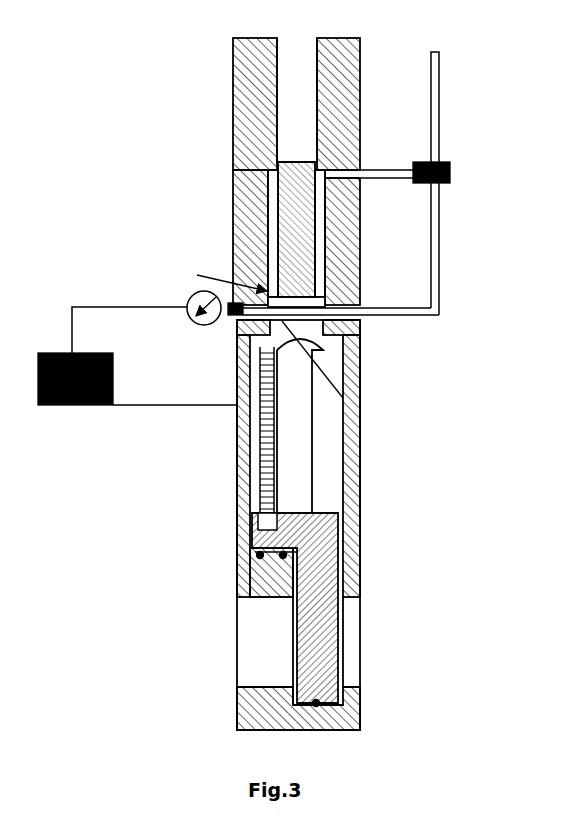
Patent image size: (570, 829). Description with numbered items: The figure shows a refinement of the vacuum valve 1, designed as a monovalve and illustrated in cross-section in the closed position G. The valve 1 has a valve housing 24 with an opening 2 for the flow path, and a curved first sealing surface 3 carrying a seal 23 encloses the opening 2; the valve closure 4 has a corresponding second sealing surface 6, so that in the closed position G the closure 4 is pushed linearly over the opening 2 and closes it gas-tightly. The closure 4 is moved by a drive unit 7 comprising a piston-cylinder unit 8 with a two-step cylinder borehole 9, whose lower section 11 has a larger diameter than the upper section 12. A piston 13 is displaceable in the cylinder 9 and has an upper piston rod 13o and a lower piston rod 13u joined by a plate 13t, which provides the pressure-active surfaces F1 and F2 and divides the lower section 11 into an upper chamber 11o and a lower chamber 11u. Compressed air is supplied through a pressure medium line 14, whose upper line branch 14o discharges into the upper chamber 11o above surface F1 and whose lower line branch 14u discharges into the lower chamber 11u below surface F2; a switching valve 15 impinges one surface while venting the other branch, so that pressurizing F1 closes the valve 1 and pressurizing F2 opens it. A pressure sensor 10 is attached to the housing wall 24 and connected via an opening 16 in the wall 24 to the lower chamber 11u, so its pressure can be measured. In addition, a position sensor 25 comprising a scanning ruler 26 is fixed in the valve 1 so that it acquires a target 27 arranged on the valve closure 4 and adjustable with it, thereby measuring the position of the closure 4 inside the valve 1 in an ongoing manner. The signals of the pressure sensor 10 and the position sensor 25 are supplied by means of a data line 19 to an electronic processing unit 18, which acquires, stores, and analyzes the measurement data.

The vacuum valve 1 is at (212, 52).
The opening 2 is at (248, 673).
The first sealing surface 3 is at (250, 597).
The valve closure 4 is at (322, 563).
The second sealing surface 6 is at (273, 567).
The drive unit 7 is at (474, 94).
The piston-cylinder unit 8 is at (224, 252).
The cylinder borehole 9 is at (250, 214).
The pressure sensor 10 is at (212, 322).
The lower section of cylinder borehole 11 is at (332, 258).
The upper chamber 11o is at (270, 180).
The lower chamber 11u is at (362, 335).
The upper section of cylinder borehole 12 is at (288, 118).
The piston 13 is at (307, 238).
The upper piston rod 13o is at (300, 195).
The plate 13t is at (362, 373).
The lower piston rod 13u is at (303, 503).
The pressure medium line 14 is at (432, 72).
The upper line branch 14o is at (402, 175).
The lower line branch 14u is at (438, 303).
The switching valve 15 is at (452, 180).
The opening in the wall 16 is at (233, 342).
The electronic processing unit 18 is at (95, 406).
The data line 19 is at (117, 306).
The seal 23 is at (318, 702).
The valve housing 24 is at (350, 448).
The position sensor 25 is at (257, 476).
The scanning ruler 26 is at (236, 422).
The target 27 is at (258, 517).
The pressure-active surface F1 is at (206, 278).
The pressure-active surface F2 is at (360, 412).
The closed position G is at (375, 544).